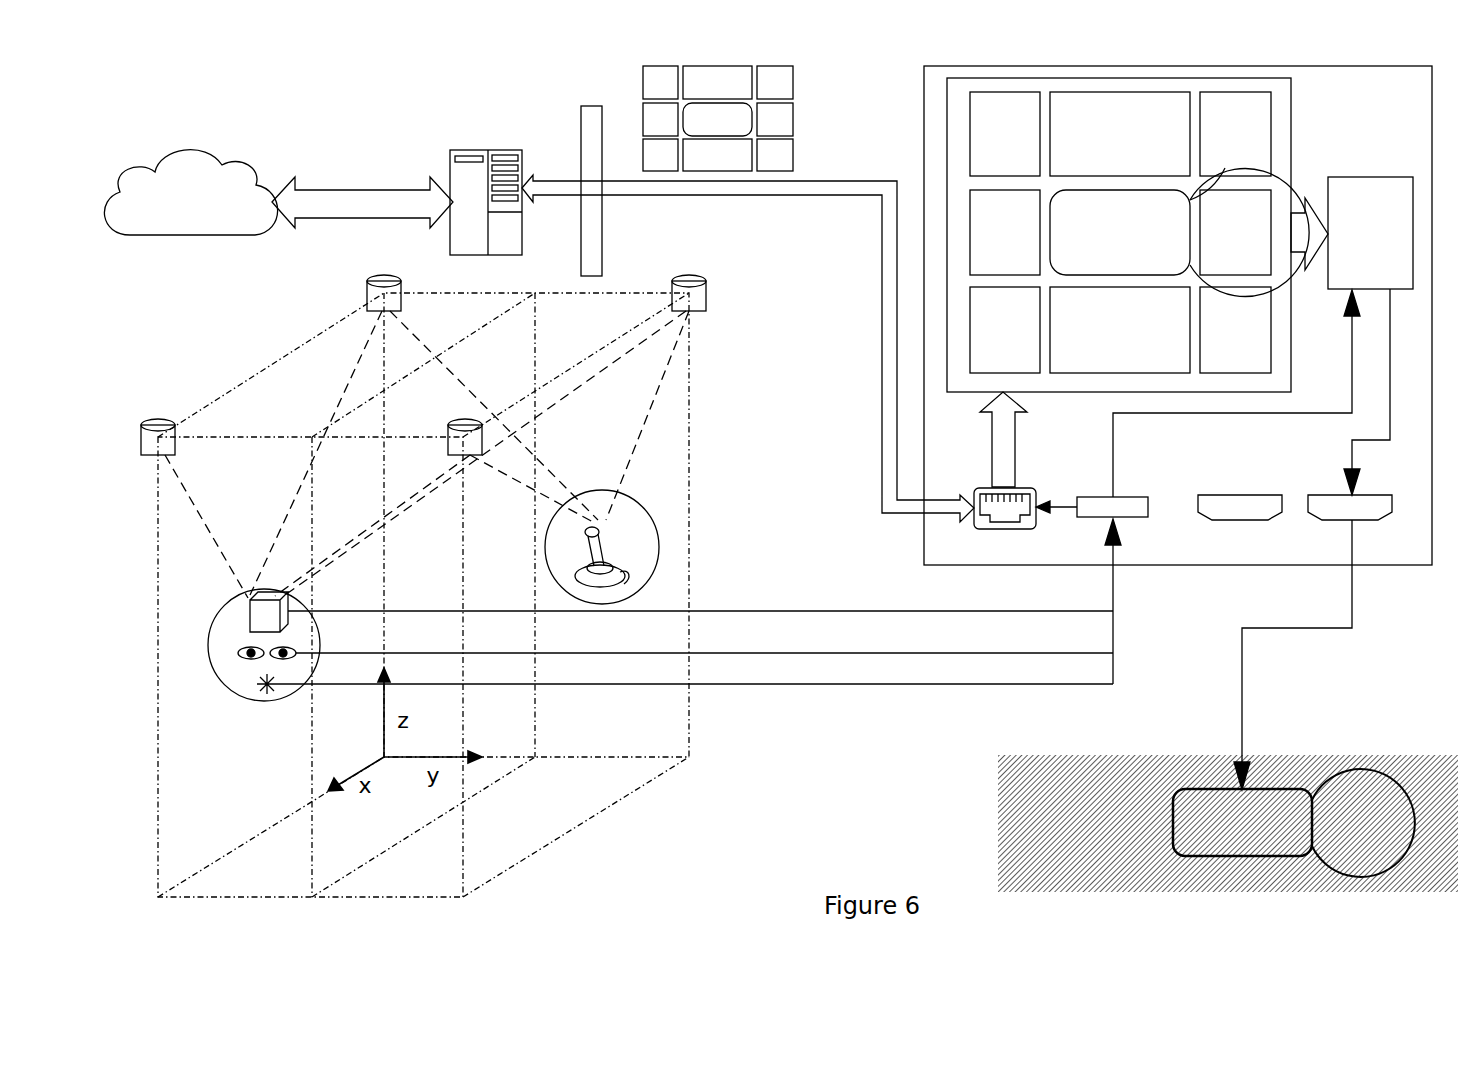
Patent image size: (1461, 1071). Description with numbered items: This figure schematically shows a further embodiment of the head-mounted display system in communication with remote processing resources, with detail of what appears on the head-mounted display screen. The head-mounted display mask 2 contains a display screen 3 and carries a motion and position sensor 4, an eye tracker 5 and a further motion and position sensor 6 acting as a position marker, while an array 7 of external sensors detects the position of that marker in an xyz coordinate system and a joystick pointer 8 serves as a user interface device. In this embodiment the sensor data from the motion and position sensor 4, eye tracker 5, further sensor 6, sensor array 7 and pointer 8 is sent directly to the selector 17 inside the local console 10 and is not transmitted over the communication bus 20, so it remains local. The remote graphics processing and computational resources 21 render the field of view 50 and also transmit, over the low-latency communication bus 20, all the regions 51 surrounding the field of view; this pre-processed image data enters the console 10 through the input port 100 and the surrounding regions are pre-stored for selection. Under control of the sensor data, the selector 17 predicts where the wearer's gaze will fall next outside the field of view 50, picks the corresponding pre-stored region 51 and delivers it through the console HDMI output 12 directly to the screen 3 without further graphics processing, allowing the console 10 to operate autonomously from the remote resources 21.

The head-mounted display mask 2 is at (212, 705).
The display screen 3 is at (1272, 856).
The motion and position sensor 4 is at (820, 684).
The eye tracker 5 is at (850, 653).
The further motion and position sensor 6 is at (860, 611).
The array of sensors 7 is at (153, 418).
The pointer 8 is at (660, 541).
The console 10 is at (1392, 565).
The console HDMI output 12 is at (1322, 492).
The selector 17 is at (1377, 177).
The low-latency communication bus 20 is at (842, 181).
The graphics processing and computational resources 21 is at (493, 150).
The field of view 50 is at (700, 100).
The region outside the field of view 51 is at (793, 86).
The input port 100 is at (1032, 488).